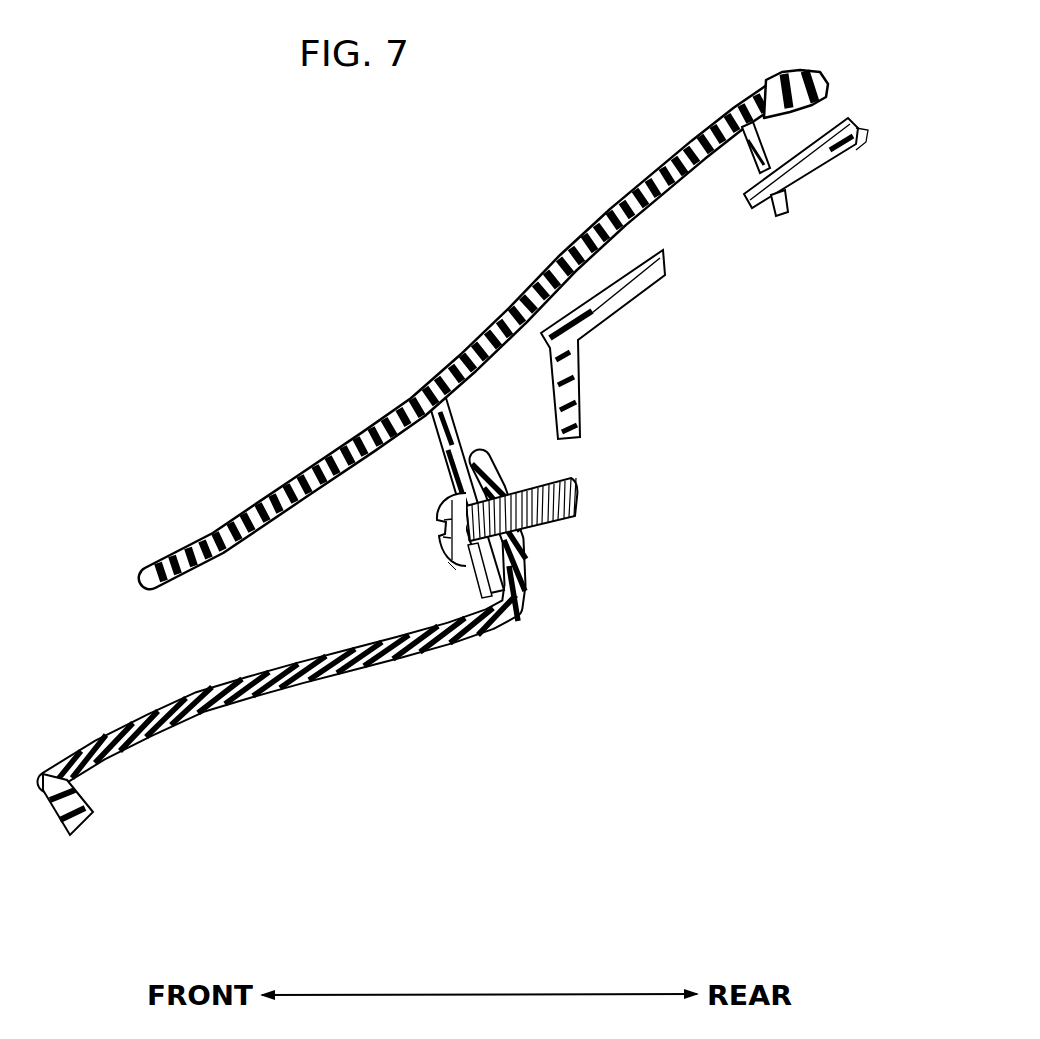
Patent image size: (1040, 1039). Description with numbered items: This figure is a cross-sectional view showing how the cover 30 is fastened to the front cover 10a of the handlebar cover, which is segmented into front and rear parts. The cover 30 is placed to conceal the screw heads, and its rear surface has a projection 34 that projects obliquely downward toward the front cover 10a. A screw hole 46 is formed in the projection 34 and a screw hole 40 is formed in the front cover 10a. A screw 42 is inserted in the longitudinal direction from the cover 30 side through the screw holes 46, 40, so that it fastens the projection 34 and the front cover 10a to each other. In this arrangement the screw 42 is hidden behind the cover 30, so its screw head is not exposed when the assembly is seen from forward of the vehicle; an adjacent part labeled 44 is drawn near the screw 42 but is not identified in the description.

The cover 30 is at (583, 230).
The projection 34 is at (433, 452).
The screw hole 40 is at (520, 530).
The screw 42 is at (445, 567).
The nut 44 is at (440, 520).
The screw hole 46 is at (480, 592).
The front cover 10a is at (340, 665).